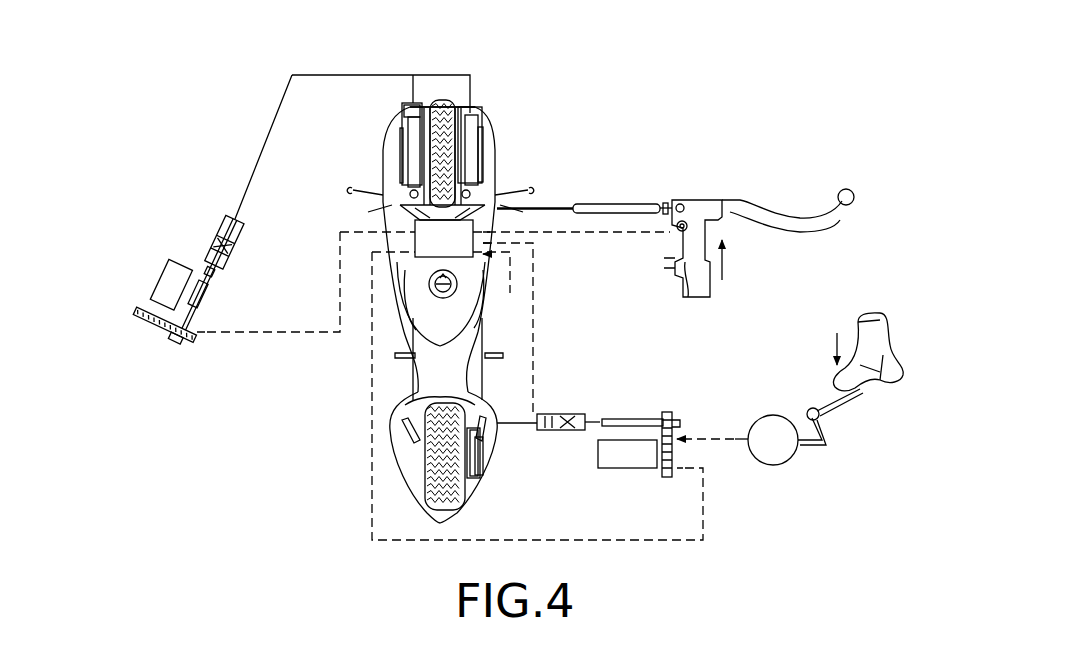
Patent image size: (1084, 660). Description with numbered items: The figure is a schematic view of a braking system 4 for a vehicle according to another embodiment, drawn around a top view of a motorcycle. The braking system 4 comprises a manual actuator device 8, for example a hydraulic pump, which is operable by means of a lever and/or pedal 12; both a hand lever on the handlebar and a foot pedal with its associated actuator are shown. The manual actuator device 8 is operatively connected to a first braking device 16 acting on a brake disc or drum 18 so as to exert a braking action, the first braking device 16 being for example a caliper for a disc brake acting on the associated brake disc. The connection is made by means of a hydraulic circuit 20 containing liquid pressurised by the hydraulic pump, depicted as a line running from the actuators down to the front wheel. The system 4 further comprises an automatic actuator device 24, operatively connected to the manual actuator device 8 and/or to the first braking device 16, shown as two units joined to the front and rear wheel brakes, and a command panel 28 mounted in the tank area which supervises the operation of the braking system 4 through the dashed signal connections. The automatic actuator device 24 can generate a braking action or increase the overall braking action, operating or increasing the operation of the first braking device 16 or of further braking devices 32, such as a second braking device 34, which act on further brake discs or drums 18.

The braking system 4 is at (668, 130).
The manual actuator device 8 is at (692, 190).
The lever and/or pedal 12 is at (838, 200).
The first braking device 16 is at (498, 118).
The brake disc or drum 18 is at (493, 116).
The hydraulic circuit 20 is at (282, 76).
The automatic actuator device 24 is at (140, 290).
The command panel 28 is at (417, 258).
The further braking devices 32 is at (488, 476).
The second braking device 34 is at (406, 98).